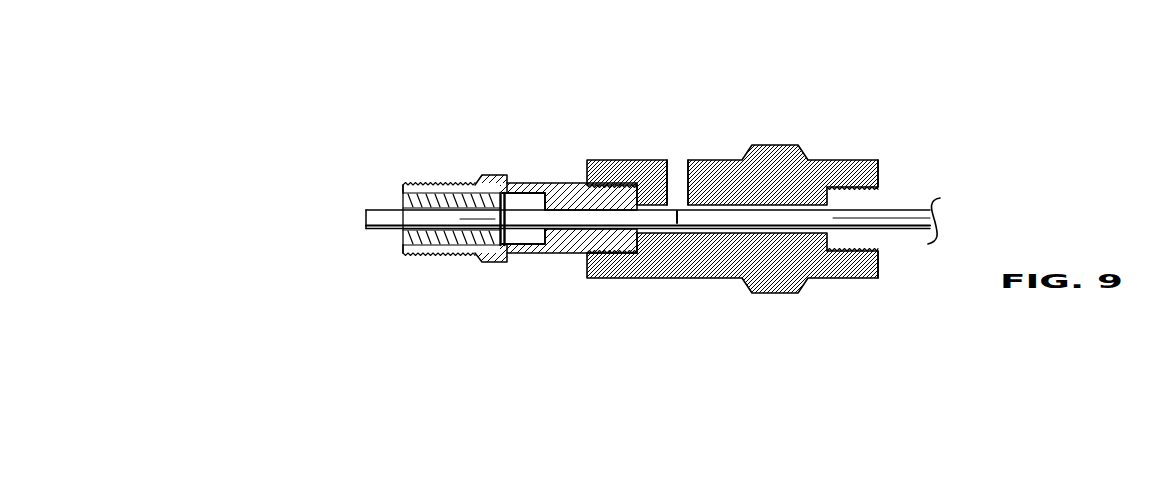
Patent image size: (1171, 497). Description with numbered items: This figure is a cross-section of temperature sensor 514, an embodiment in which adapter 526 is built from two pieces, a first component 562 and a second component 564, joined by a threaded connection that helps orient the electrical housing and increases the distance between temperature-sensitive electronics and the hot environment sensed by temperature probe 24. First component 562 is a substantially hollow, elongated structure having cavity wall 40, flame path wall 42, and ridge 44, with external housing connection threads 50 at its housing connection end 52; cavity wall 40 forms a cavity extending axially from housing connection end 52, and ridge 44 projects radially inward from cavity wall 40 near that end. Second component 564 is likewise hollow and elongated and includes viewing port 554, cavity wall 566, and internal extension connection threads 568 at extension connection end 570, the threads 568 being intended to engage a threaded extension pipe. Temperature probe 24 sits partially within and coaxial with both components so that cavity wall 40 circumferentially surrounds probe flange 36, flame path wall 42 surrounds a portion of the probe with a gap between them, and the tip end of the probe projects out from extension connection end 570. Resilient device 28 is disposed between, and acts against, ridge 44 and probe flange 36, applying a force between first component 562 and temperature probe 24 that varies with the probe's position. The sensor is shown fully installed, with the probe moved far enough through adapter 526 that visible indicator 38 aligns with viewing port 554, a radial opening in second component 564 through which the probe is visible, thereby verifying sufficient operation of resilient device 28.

The temperature sensor 514 is at (338, 122).
The temperature probe 24 is at (912, 231).
The ridge 44 is at (396, 200).
The external housing connection threads 50 is at (432, 255).
The housing connection end 52 is at (403, 253).
The resilient device 28 is at (470, 184).
The cavity wall 40 is at (520, 183).
The first component 562 is at (550, 183).
The flame path wall 42 is at (575, 232).
The probe flange 36 is at (505, 242).
The second component 564 is at (777, 145).
The adapter 526 is at (635, 278).
The viewing port 554 is at (666, 167).
The cavity wall 566 is at (822, 207).
The internal extension connection threads 568 is at (863, 248).
The extension connection end 570 is at (878, 263).
The visible indicator 38 is at (678, 213).